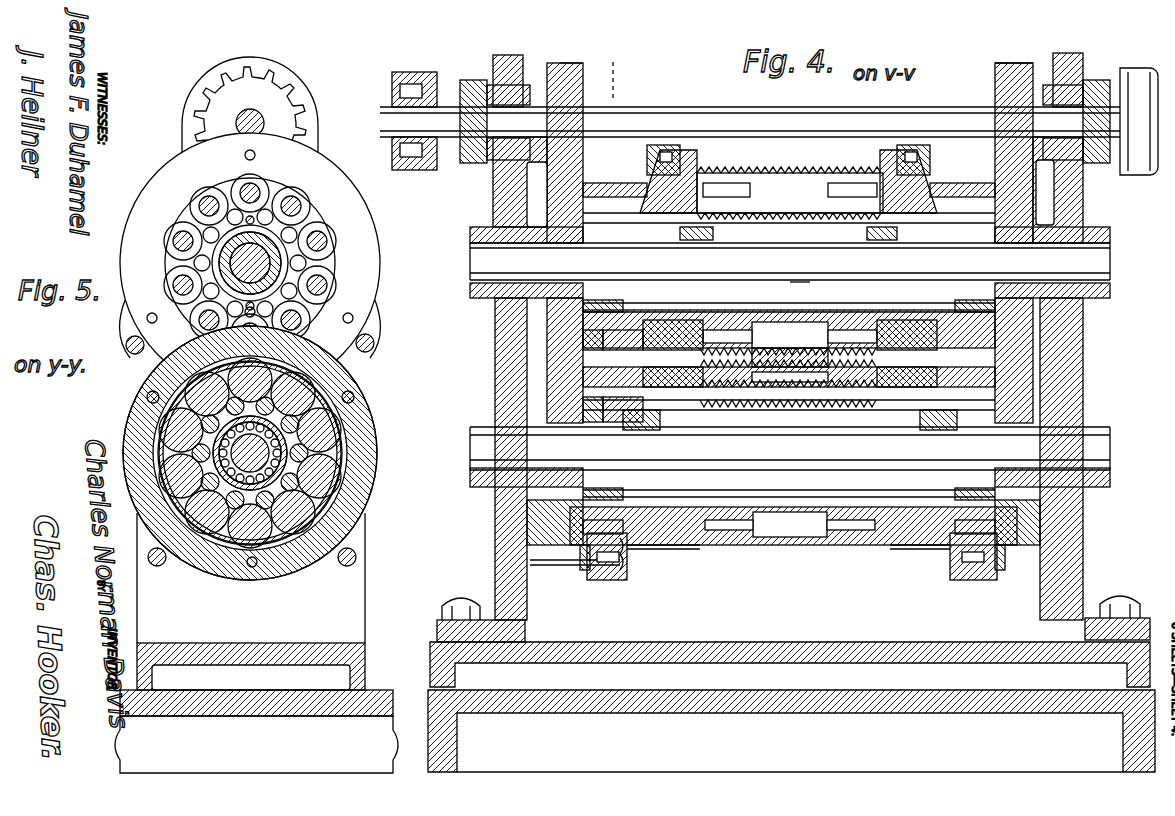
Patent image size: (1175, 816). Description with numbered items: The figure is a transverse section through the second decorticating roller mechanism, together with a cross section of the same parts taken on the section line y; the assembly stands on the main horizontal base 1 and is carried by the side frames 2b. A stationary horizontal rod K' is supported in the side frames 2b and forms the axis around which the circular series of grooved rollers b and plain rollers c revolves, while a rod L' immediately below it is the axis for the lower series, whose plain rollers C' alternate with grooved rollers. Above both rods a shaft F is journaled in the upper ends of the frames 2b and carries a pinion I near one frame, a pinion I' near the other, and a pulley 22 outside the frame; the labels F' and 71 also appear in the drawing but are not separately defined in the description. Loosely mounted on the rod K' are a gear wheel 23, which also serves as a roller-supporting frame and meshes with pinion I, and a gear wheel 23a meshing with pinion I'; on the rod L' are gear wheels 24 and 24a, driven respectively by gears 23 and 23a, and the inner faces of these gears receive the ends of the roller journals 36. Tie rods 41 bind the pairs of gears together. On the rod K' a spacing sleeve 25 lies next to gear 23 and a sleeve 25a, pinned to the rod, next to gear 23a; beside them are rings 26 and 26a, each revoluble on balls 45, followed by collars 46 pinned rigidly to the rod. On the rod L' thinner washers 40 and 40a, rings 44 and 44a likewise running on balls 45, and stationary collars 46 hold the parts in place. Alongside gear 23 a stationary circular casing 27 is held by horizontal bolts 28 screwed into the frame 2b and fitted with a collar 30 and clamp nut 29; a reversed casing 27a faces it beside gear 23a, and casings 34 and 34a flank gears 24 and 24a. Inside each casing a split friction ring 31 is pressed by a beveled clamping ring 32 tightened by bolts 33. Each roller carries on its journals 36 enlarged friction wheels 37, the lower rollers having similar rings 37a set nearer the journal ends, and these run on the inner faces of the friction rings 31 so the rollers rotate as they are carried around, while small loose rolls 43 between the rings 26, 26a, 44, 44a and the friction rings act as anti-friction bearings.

In FIG. 4, the main horizontal base 1 is at (430, 720).
In FIG. 4, the side frames 2b is at (527, 512).
In FIG. 4, the pulley 22 is at (414, 170).
In FIG. 4, the gear wheel 23 is at (530, 195).
In FIG. 4, the gear wheel 23a is at (1030, 200).
In FIG. 4, the gear wheel 24 is at (545, 380).
In FIG. 4, the gear wheel 24a is at (1030, 372).
In FIG. 5, the spacing sleeve 25 is at (283, 270).
In FIG. 4, the spacing sleeve 25 is at (530, 326).
In FIG. 4, the spacing sleeve 25a is at (1035, 315).
In FIG. 4, the ring or sleeve 26 is at (700, 222).
In FIG. 4, the ring or sleeve 26a is at (880, 222).
In FIG. 4, the stationary circular casing 27 is at (655, 160).
In FIG. 4, the stationary circular casing 27a is at (930, 172).
In FIG. 5, the horizontal bolts 28 is at (157, 562).
In FIG. 4, the horizontal bolts 28 is at (530, 345).
In FIG. 4, the clamp nut 29 is at (945, 560).
In FIG. 4, the collar 30 is at (530, 562).
In FIG. 5, the friction ring 31 is at (267, 550).
In FIG. 4, the friction ring 31 is at (605, 582).
In FIG. 4, the clamping ring 32 is at (624, 560).
In FIG. 4, the bolts 33 is at (680, 157).
In FIG. 4, the casing 34 is at (588, 570).
In FIG. 4, the casing 34a is at (1000, 572).
In FIG. 4, the journal 36 is at (590, 182).
In FIG. 4, the friction wheel 37 is at (915, 558).
In FIG. 5, the friction ring 37a is at (343, 417).
In FIG. 4, the friction ring 37a is at (583, 405).
In FIG. 4, the washer 40 is at (495, 500).
In FIG. 4, the washer 40a is at (1040, 412).
In FIG. 5, the tie rods 41 is at (307, 365).
In FIG. 4, the tie rods 41 is at (873, 560).
In FIG. 5, the intermediate loose rolls 43 is at (307, 453).
In FIG. 4, the intermediate loose rolls 43 is at (645, 410).
In FIG. 5, the ring 44 is at (280, 403).
In FIG. 4, the ring 44 is at (630, 415).
In FIG. 4, the ring 44a is at (950, 415).
In FIG. 5, the rollers or balls 45 is at (343, 510).
In FIG. 4, the rollers or balls 45 is at (850, 244).
In FIG. 4, the collars 46 is at (700, 240).
In FIG. 4, the roller 71 is at (813, 392).
In FIG. 4, the grooved roller b is at (790, 183).
In FIG. 4, the plain roller c is at (800, 282).
In FIG. 4, the plain lower roller C' is at (793, 539).
In FIG. 5, the shaft F is at (268, 82).
In FIG. 4, the shaft F is at (1139, 184).
In FIG. 4, the shaft F' is at (750, 104).
In FIG. 4, the pinion I is at (573, 54).
In FIG. 5, the pinion I' is at (250, 104).
In FIG. 4, the pinion I' is at (996, 54).
In FIG. 5, the stationary horizontal rod K' is at (310, 260).
In FIG. 4, the stationary horizontal rod K' is at (803, 261).
In FIG. 4, the rod L' is at (805, 439).
In FIG. 4, the section line y is at (620, 608).